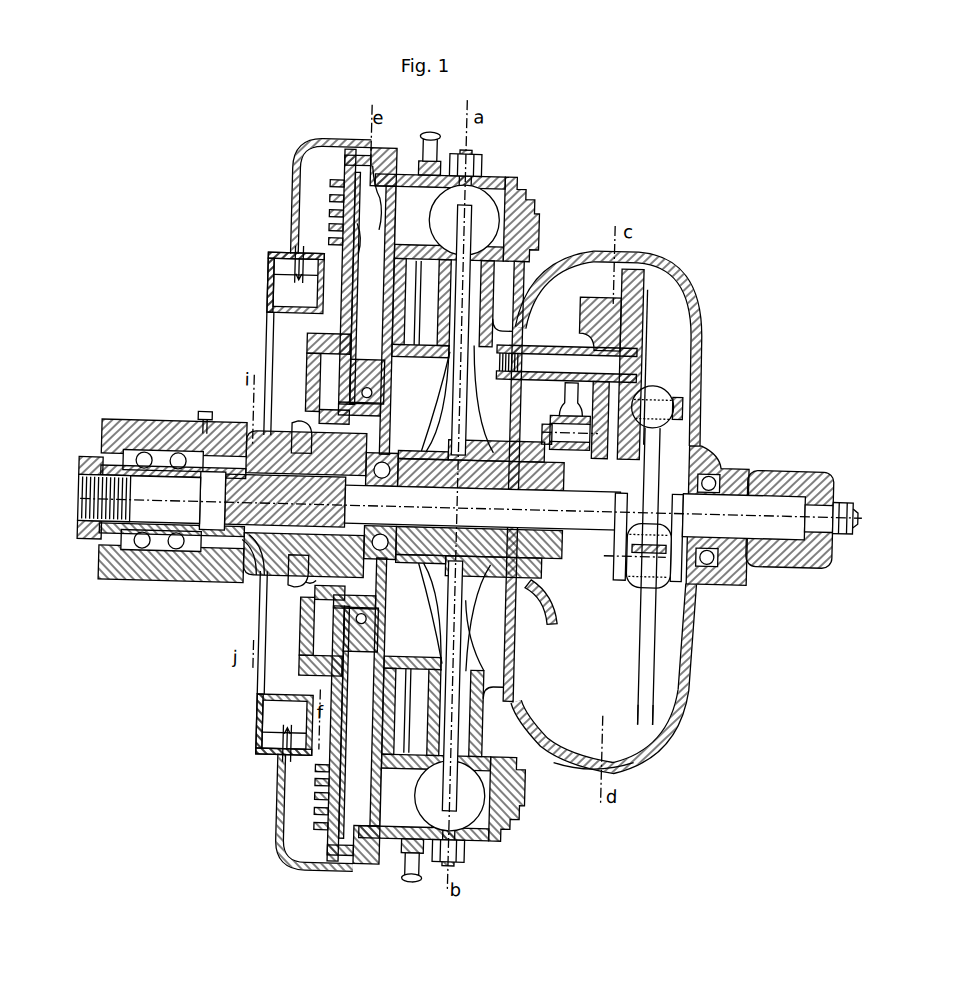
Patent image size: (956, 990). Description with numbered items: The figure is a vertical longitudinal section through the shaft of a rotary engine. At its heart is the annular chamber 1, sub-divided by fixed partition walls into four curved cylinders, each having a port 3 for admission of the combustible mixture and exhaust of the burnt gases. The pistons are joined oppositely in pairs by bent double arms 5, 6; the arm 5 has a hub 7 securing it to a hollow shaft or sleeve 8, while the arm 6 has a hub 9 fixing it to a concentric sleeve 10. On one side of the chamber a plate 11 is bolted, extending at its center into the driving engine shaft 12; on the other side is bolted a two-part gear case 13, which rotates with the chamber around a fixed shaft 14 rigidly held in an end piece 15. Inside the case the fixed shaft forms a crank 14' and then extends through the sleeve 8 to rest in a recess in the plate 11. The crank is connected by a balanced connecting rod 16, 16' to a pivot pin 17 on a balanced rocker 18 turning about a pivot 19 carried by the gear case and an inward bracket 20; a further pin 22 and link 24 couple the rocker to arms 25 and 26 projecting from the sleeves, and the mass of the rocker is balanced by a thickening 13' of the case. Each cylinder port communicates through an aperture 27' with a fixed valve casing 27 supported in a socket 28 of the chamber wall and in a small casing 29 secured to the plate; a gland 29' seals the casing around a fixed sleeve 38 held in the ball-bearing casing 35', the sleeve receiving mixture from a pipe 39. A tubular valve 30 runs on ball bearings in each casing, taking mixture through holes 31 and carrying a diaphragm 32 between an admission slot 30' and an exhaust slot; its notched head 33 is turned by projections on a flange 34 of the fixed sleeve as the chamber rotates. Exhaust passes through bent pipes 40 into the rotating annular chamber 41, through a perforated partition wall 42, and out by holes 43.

The annular chamber 1 is at (465, 197).
The port 3 is at (400, 196).
The double arm 5 is at (438, 448).
The double arm 6 is at (470, 424).
The hub 7 is at (428, 546).
The hollow shaft or sleeve 8 is at (418, 488).
The hub 9 is at (481, 454).
The hollow shaft or sleeve 10 is at (470, 622).
The plate 11 is at (428, 348).
The engine shaft 12 is at (253, 559).
The gear case 13 is at (633, 485).
The thickening 13' is at (587, 794).
The fixed shaft 14 is at (771, 478).
The crank 14' is at (639, 557).
The end piece 15 is at (801, 474).
The connecting rod 16 is at (634, 576).
The connecting rod portion 16' is at (625, 679).
The pivot pin 17 is at (630, 406).
The rocker 18 is at (608, 406).
The pivot 19 is at (566, 349).
The bracket 20 is at (642, 312).
The pivot pin 22 is at (568, 437).
The link 24 is at (566, 363).
The arm 25 is at (545, 589).
The arm 26 is at (538, 428).
The valve casing 27 is at (366, 507).
The aperture 27' is at (436, 507).
The socket 28 is at (342, 208).
The casing 29 is at (350, 517).
The gland 29' is at (292, 591).
The tubular valve 30 is at (357, 505).
The admission slot 30' is at (285, 237).
The holes 31 is at (384, 395).
The diaphragm 32 is at (374, 192).
The head piece 33 is at (446, 437).
The flange 34 is at (301, 420).
The ball-bearing casing 35' is at (172, 492).
The fixed sleeve 38 is at (253, 442).
The pipe 39 is at (250, 608).
The bent pipe 40 is at (298, 161).
The annular exhaust chamber 41 is at (278, 299).
The perforated partition wall 42 is at (267, 275).
The holes 43 is at (265, 295).